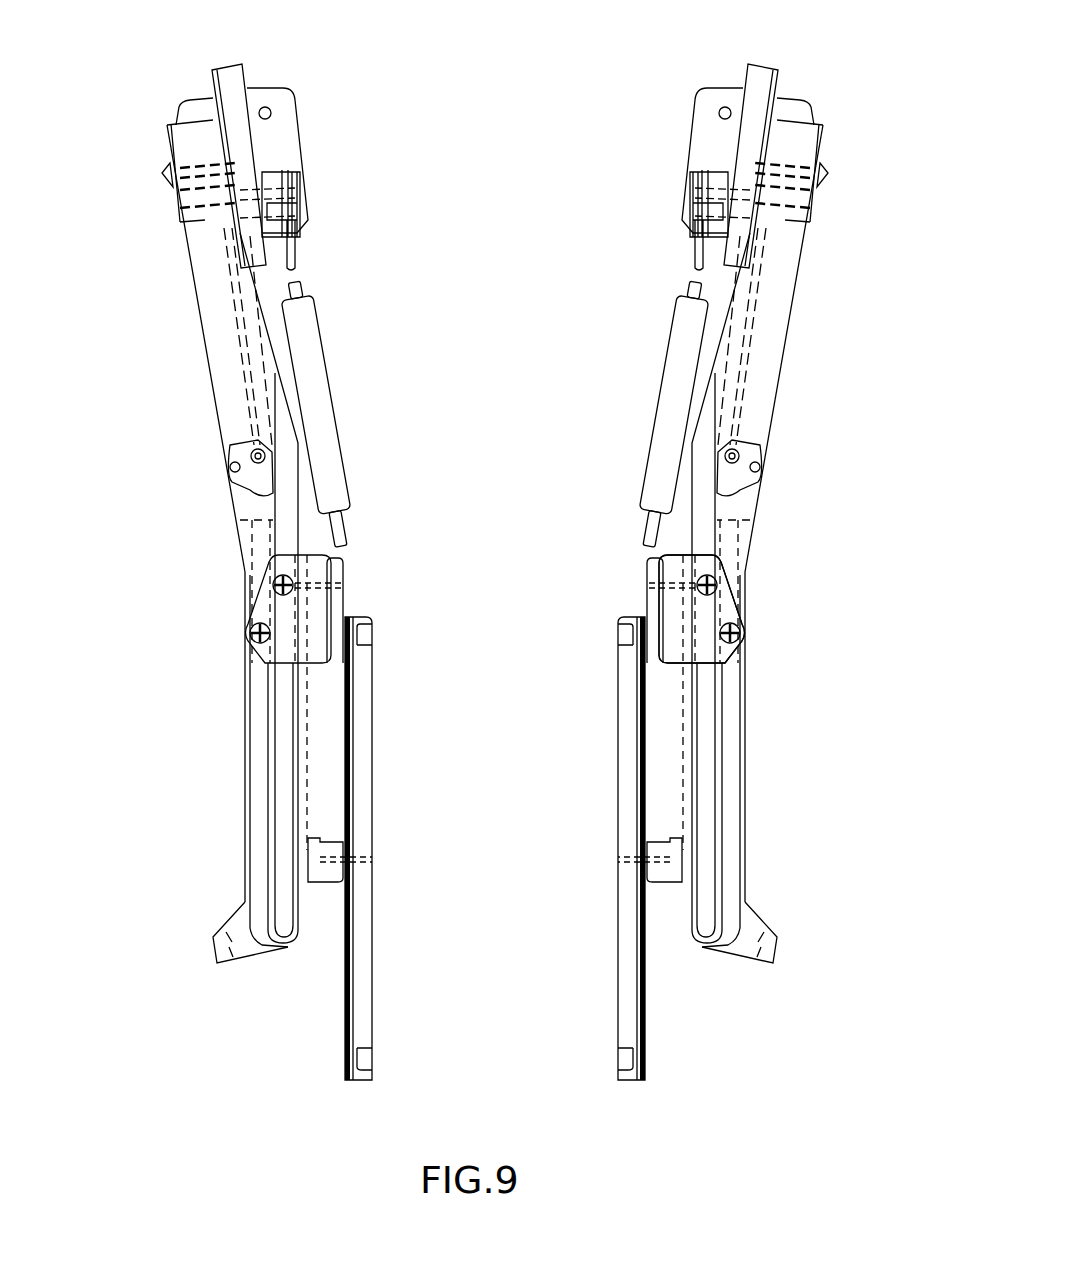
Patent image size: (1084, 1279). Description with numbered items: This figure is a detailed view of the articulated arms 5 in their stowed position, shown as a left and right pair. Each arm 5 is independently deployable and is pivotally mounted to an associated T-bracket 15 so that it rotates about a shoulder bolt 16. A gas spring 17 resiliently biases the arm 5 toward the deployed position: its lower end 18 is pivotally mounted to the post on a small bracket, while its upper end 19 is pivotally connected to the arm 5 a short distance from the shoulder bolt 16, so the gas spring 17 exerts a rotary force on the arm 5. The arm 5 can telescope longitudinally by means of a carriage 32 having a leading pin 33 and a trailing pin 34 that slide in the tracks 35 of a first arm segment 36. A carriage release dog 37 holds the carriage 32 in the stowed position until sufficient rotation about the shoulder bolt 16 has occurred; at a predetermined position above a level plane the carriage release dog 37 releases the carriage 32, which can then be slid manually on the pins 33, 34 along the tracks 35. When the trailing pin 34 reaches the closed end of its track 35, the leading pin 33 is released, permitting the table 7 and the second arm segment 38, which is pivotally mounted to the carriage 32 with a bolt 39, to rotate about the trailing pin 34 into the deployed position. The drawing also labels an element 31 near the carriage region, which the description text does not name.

The articulated arm 5 is at (212, 518).
The table 7 is at (373, 993).
The T-bracket 15 is at (247, 73).
The shoulder bolt 16 is at (162, 176).
The gas spring 17 is at (330, 383).
The lower end of the gas spring 18 is at (343, 533).
The upper end of the gas spring 19 is at (300, 183).
The mounting bracket 31 is at (263, 657).
The carriage 32 is at (722, 657).
The leading pin 33 is at (250, 632).
The trailing pin 34 is at (250, 577).
The tracks 35 is at (260, 793).
The first arm segment 36 is at (247, 860).
The carriage release dog 37 is at (236, 493).
The second arm segment 38 is at (336, 752).
The bolt 39 is at (337, 583).